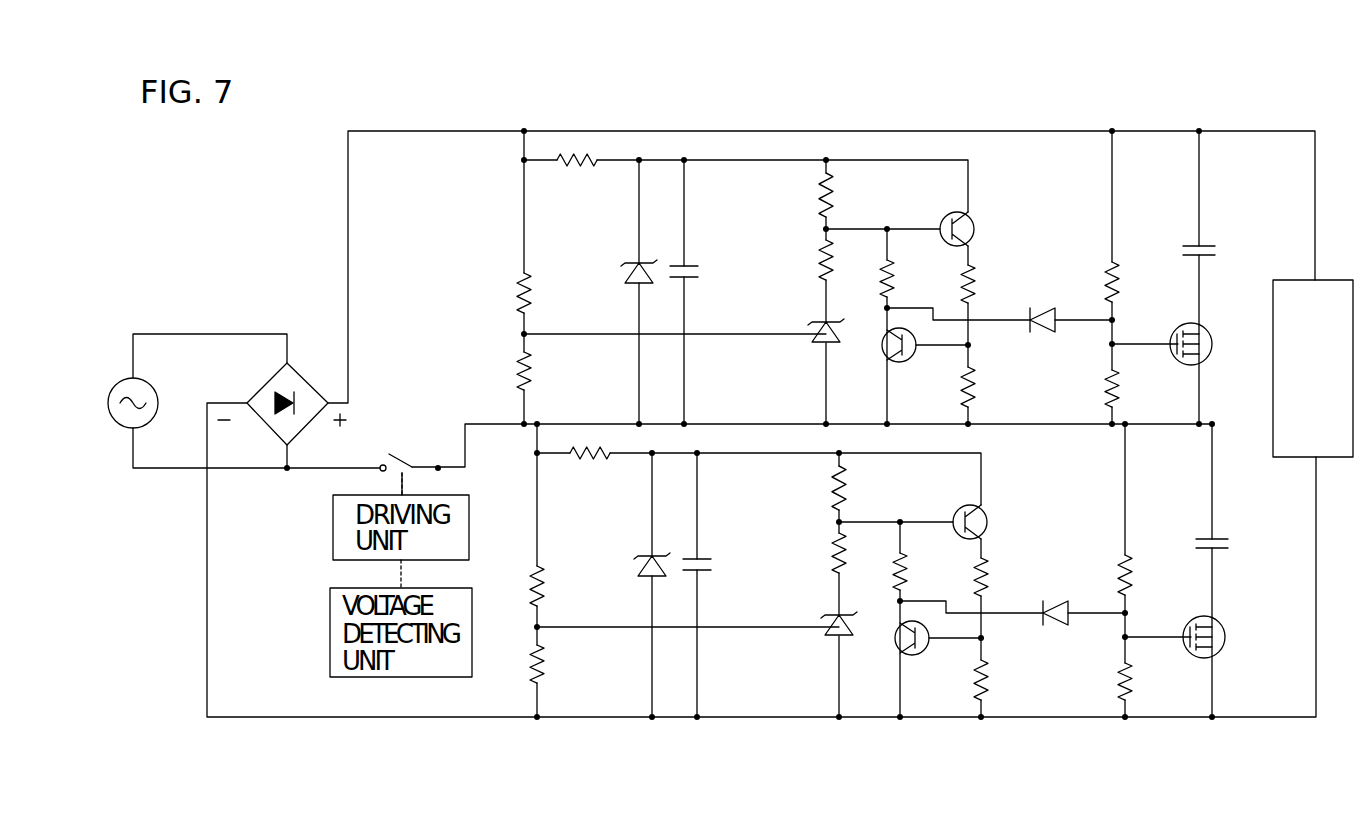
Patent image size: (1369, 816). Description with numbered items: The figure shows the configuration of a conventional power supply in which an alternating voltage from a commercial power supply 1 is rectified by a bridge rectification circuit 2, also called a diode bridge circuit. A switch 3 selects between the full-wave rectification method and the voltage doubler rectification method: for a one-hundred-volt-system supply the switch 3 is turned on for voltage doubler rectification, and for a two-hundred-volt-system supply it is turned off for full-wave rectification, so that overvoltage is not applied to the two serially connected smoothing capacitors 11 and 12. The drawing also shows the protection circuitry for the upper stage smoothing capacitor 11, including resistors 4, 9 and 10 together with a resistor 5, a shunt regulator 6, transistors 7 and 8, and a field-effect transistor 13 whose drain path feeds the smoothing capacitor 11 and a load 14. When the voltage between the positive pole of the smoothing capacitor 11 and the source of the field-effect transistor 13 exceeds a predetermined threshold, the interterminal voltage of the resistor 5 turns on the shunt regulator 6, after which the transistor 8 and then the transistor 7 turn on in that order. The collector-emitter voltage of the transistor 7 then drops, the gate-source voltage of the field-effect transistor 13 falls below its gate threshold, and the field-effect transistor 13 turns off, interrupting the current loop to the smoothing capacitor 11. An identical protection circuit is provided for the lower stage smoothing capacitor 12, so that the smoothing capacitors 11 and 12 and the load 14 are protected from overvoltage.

The commercial power supply 1 is at (148, 384).
The bridge rectification circuit 2 is at (305, 383).
The switch 3 is at (400, 459).
The resistor 4 is at (533, 300).
The resistor 5 is at (533, 378).
The shunt regulator 6 is at (829, 321).
The transistor 7 is at (912, 357).
The transistor 8 is at (976, 229).
The resistor 9 is at (1118, 277).
The resistor 10 is at (1118, 390).
The smoothing capacitor 11 is at (1207, 242).
The smoothing capacitor 12 is at (1222, 536).
The field-effect transistor 13 is at (1212, 353).
The load 14 is at (1330, 279).